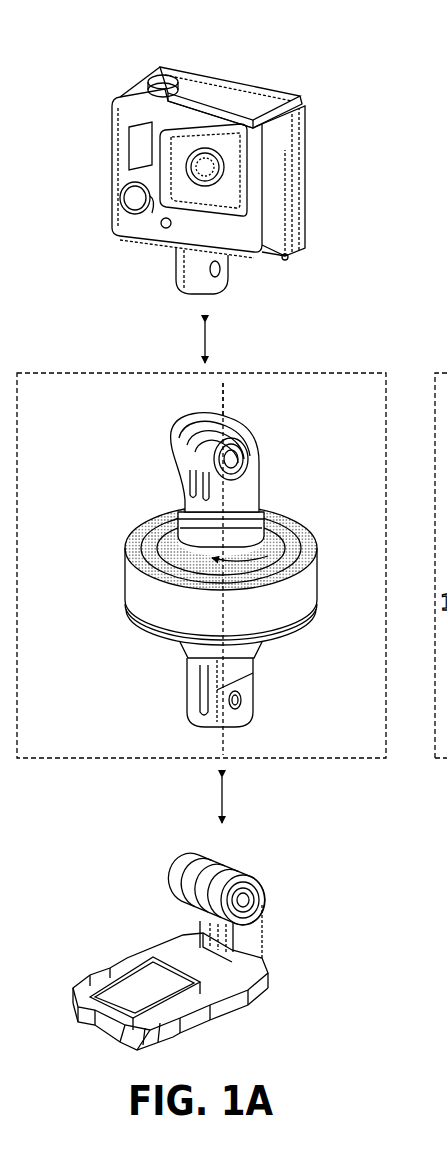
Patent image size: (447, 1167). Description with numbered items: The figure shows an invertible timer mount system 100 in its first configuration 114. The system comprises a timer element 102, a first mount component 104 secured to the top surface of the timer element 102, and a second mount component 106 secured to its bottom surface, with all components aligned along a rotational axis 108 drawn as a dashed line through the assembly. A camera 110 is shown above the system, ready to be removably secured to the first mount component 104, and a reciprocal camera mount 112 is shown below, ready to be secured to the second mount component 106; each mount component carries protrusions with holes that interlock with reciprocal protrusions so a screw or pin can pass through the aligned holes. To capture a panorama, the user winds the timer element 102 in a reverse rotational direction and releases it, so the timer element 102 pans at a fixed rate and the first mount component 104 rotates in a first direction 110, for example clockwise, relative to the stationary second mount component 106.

The timer mount system 100 is at (128, 462).
The timer element 102 is at (122, 580).
The first mount component 104 is at (268, 460).
The second mount component 106 is at (182, 690).
The rotational axis 108 is at (227, 406).
The camera 110 is at (178, 40).
The reciprocal camera mount 112 is at (132, 906).
The first configuration 114 is at (107, 366).